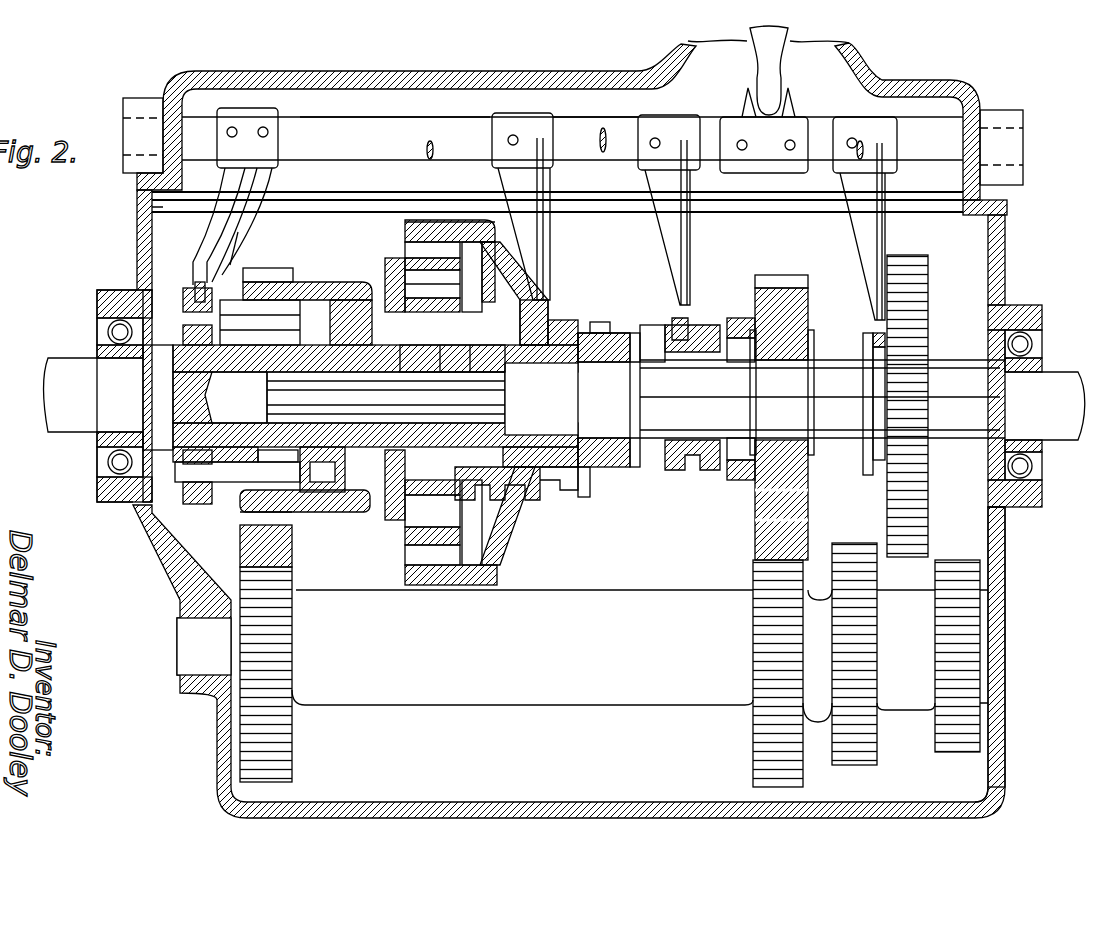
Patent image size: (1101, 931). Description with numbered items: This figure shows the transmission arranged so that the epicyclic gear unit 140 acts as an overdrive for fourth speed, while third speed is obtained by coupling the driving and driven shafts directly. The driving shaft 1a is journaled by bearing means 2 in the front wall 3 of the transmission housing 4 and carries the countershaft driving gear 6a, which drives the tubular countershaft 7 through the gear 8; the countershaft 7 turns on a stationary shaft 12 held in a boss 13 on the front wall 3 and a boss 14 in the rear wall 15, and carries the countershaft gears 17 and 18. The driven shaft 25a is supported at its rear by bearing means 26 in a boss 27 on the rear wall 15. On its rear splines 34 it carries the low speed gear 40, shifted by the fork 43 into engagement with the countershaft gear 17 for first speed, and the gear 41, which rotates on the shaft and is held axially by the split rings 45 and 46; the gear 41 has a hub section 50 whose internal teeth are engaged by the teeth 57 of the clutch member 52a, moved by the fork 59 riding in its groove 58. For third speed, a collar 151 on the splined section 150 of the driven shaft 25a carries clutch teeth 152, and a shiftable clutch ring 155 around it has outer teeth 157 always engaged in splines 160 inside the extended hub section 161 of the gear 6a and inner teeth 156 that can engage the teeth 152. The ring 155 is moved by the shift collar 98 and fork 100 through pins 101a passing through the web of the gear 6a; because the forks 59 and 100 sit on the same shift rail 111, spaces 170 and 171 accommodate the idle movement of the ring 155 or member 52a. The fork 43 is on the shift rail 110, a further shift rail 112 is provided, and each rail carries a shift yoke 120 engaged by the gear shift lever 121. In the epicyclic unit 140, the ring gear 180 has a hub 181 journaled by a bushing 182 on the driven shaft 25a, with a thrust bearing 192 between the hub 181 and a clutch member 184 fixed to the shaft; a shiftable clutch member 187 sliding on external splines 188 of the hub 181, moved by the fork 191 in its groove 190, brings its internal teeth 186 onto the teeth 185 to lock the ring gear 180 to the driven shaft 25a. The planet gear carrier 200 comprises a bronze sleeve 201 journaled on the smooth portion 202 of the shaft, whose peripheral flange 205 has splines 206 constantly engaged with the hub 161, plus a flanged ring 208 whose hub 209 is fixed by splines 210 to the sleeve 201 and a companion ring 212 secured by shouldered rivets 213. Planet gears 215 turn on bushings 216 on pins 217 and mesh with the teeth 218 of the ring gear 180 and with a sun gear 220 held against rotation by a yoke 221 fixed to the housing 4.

The driving shaft 1a is at (62, 365).
The bearing means 2 is at (105, 332).
The front wall 3 is at (140, 243).
The transmission housing 4 is at (242, 68).
The countershaft driving gear 6a is at (263, 268).
The tubular countershaft 7 is at (525, 700).
The gear 8 is at (246, 543).
The stationary shaft 12 is at (186, 637).
The boss 13 is at (208, 603).
The boss 14 is at (1025, 607).
The rear wall 15 is at (1006, 558).
The countershaft gear 17 is at (845, 545).
The countershaft gear 18 is at (952, 562).
The driven shaft 25a is at (656, 335).
The bearing means 26 is at (1035, 345).
The boss 27 is at (1020, 305).
The splines 34 is at (640, 382).
The low speed gear 40 is at (930, 300).
The gear 41 is at (808, 305).
The shift fork 43 is at (860, 247).
The split ring 45 is at (752, 382).
The split ring 46 is at (814, 355).
The hub section 50 is at (732, 482).
The clutch member 52a is at (707, 488).
The clutch teeth 57 is at (700, 325).
The shift groove 58 is at (672, 472).
The shift fork 59 is at (690, 237).
The shift collar 98 is at (218, 300).
The shift fork 100 is at (240, 220).
The pins 101a is at (215, 475).
The shift rail 110 is at (922, 140).
The shift rail 111 is at (615, 135).
The shift rail 112 is at (466, 135).
The shift yoke 120 is at (775, 165).
The gear shift lever 121 is at (780, 62).
The epicyclic gear unit 140 is at (402, 231).
The splined section 150 is at (280, 398).
The collar 151 is at (275, 392).
The clutch teeth 152 is at (270, 465).
The shiftable clutch ring 155 is at (312, 472).
The inner teeth 156 is at (283, 415).
The teeth 157 is at (308, 498).
The splines 160 is at (255, 485).
The extended hub section 161 is at (345, 290).
The space 170 is at (247, 247).
The space 171 is at (630, 460).
The ring gear 180 is at (440, 218).
The hub 181 is at (565, 490).
The bushing 182 is at (545, 447).
The clutch member 184 is at (614, 333).
The teeth 185 is at (598, 322).
The internal teeth 186 is at (578, 318).
The shiftable clutch member 187 is at (556, 310).
The external splines 188 is at (514, 447).
The shifter groove 190 is at (535, 500).
The shift fork 191 is at (545, 182).
The thrust bearing 192 is at (585, 475).
The planet gear carrier 200 is at (440, 375).
The bronze sleeve 201 is at (472, 375).
The smooth portion 202 is at (443, 522).
The peripheral flange 205 is at (348, 322).
The splines 206 is at (400, 282).
The flanged ring 208 is at (470, 255).
The hub 209 is at (455, 285).
The splines 210 is at (508, 380).
The companion ring 212 is at (388, 545).
The shouldered rivets 213 is at (430, 528).
The planet gears 215 is at (405, 256).
The bushings 216 is at (400, 264).
The pins 217 is at (480, 262).
The teeth 218 is at (405, 585).
The sun gear 220 is at (430, 360).
The yoke 221 is at (375, 500).